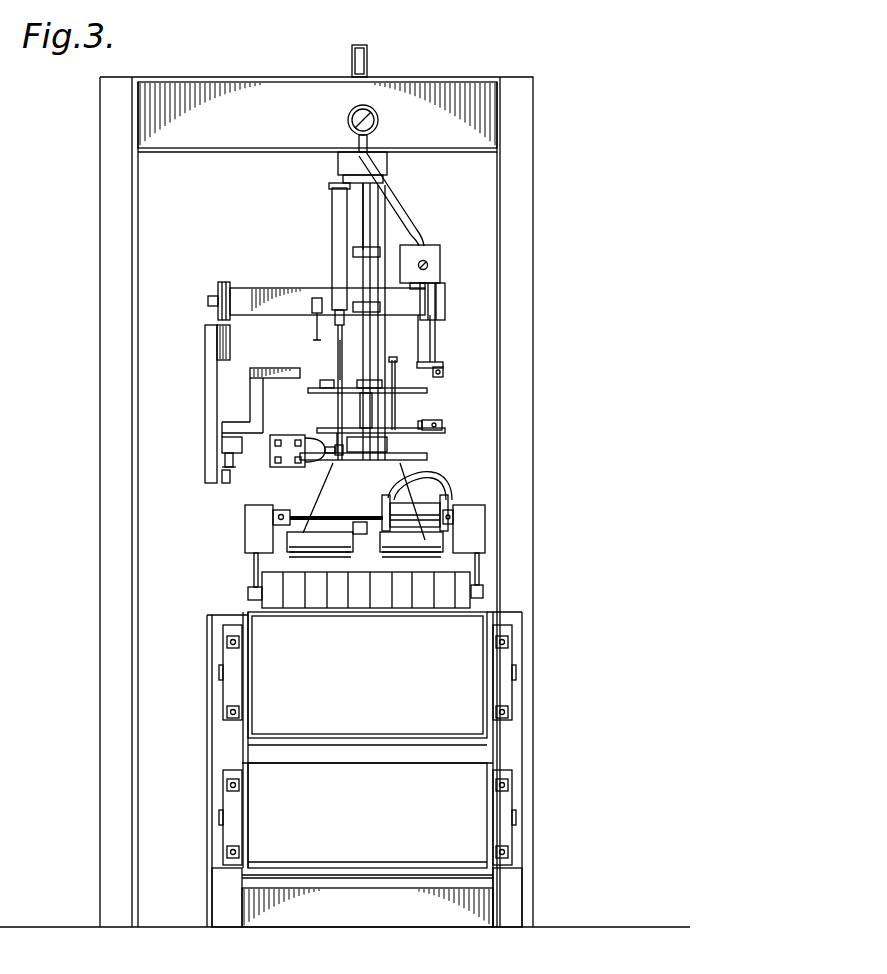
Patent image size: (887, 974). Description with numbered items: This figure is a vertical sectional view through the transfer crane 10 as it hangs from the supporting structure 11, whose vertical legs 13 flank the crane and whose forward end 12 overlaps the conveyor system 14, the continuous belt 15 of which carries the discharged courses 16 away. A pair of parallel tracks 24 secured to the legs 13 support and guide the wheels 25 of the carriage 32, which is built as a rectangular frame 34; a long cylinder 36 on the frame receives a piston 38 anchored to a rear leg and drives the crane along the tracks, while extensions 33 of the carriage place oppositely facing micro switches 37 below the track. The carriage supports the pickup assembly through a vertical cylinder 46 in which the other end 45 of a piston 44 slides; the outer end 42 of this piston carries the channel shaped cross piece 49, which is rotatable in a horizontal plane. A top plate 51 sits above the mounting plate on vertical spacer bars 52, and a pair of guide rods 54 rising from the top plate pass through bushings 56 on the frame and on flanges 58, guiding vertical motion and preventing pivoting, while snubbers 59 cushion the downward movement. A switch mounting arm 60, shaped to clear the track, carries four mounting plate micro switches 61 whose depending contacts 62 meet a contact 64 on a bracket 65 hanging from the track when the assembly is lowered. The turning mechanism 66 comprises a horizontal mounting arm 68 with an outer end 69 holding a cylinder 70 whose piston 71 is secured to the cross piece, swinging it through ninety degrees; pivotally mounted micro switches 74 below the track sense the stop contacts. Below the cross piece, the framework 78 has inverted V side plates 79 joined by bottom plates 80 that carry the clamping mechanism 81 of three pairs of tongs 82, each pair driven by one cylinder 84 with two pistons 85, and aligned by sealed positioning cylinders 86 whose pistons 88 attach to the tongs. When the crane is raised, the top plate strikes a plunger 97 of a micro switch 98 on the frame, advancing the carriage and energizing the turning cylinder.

The transfer crane 10 is at (470, 333).
The supporting structure 11 is at (548, 128).
The forward end 12 is at (525, 432).
The vertical legs 13 is at (525, 474).
The conveyor system 14 is at (496, 745).
The continuous belt 15 is at (475, 680).
The discharged courses 16 is at (426, 596).
The parallel tracks 24 is at (436, 352).
The wheels 25 is at (445, 300).
The carriage 32 is at (290, 286).
The extensions 33 is at (412, 355).
The rectangular frame 34 is at (242, 290).
The long cylinder 36 is at (440, 250).
The micro switches 37 is at (444, 371).
The piston 38 is at (428, 264).
The outer end 42 is at (358, 421).
The piston 44 is at (358, 404).
The other end 45 is at (338, 352).
The vertical cylinder 46 is at (372, 207).
The cross piece 49 is at (390, 443).
The top plate 51 is at (427, 390).
The vertical spacer bars 52 is at (396, 408).
The guide rods 54 is at (372, 190).
The bushings 56 is at (381, 250).
The flanges 58 is at (420, 234).
The snubbers 59 is at (332, 218).
The switch mounting arm 60 is at (274, 368).
The mounting plate micro switches 61 is at (222, 445).
The depending contacts 62 is at (222, 462).
The contact 64 is at (226, 482).
The bracket 65 is at (200, 398).
The turning mechanism 66 is at (288, 463).
The horizontal mounting arm 68 is at (276, 436).
The outer end 69 is at (272, 462).
The cylinder 70 is at (318, 458).
The piston 71 is at (334, 470).
The pivotally mounted micro switches 74 is at (443, 428).
The framework 78 is at (422, 481).
The side plates 79 is at (386, 490).
The bottom plates 80 is at (340, 560).
The clamping mechanism 81 is at (240, 543).
The tongs 82 is at (252, 578).
The cylinder 84 is at (418, 512).
The pistons 85 is at (366, 518).
The positioning cylinders 86 is at (290, 548).
The pistons 88 is at (272, 540).
The plunger 97 is at (317, 333).
The micro switch 98 is at (314, 298).